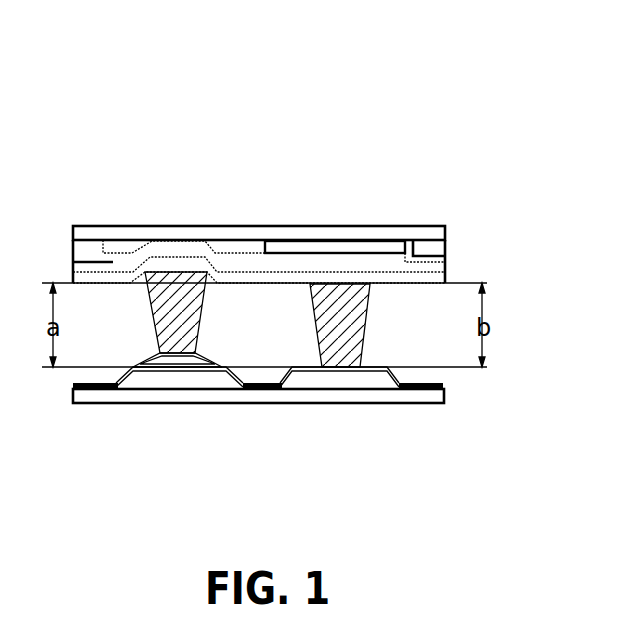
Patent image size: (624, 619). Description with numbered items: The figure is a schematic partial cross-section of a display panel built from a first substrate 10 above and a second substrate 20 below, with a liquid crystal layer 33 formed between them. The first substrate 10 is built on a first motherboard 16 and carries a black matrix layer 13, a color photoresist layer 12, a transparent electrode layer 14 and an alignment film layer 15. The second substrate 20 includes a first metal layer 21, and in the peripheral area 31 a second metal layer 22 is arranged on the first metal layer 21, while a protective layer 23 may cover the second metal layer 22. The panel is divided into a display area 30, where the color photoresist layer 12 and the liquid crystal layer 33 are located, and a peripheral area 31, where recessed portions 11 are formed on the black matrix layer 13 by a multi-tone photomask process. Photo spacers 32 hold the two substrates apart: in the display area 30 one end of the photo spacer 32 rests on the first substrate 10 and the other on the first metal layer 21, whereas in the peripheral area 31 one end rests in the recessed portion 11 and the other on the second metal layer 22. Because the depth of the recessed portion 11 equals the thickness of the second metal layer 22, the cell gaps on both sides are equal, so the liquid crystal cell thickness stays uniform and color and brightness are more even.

The first substrate 10 is at (259, 176).
The recessed portion 11 is at (259, 160).
The color photoresist layer 12 is at (285, 178).
The black matrix layer 13 is at (314, 157).
The transparent electrode layer 14 is at (259, 186).
The alignment film layer 15 is at (259, 199).
The first motherboard 16 is at (259, 143).
The second substrate 20 is at (258, 451).
The first metal layer 21 is at (236, 431).
The second metal layer 22 is at (167, 408).
The protective layer 23 is at (447, 302).
The display area 30 is at (178, 249).
The peripheral area 31 is at (340, 246).
The photo spacer 32 is at (369, 263).
The liquid crystal layer 33 is at (454, 239).